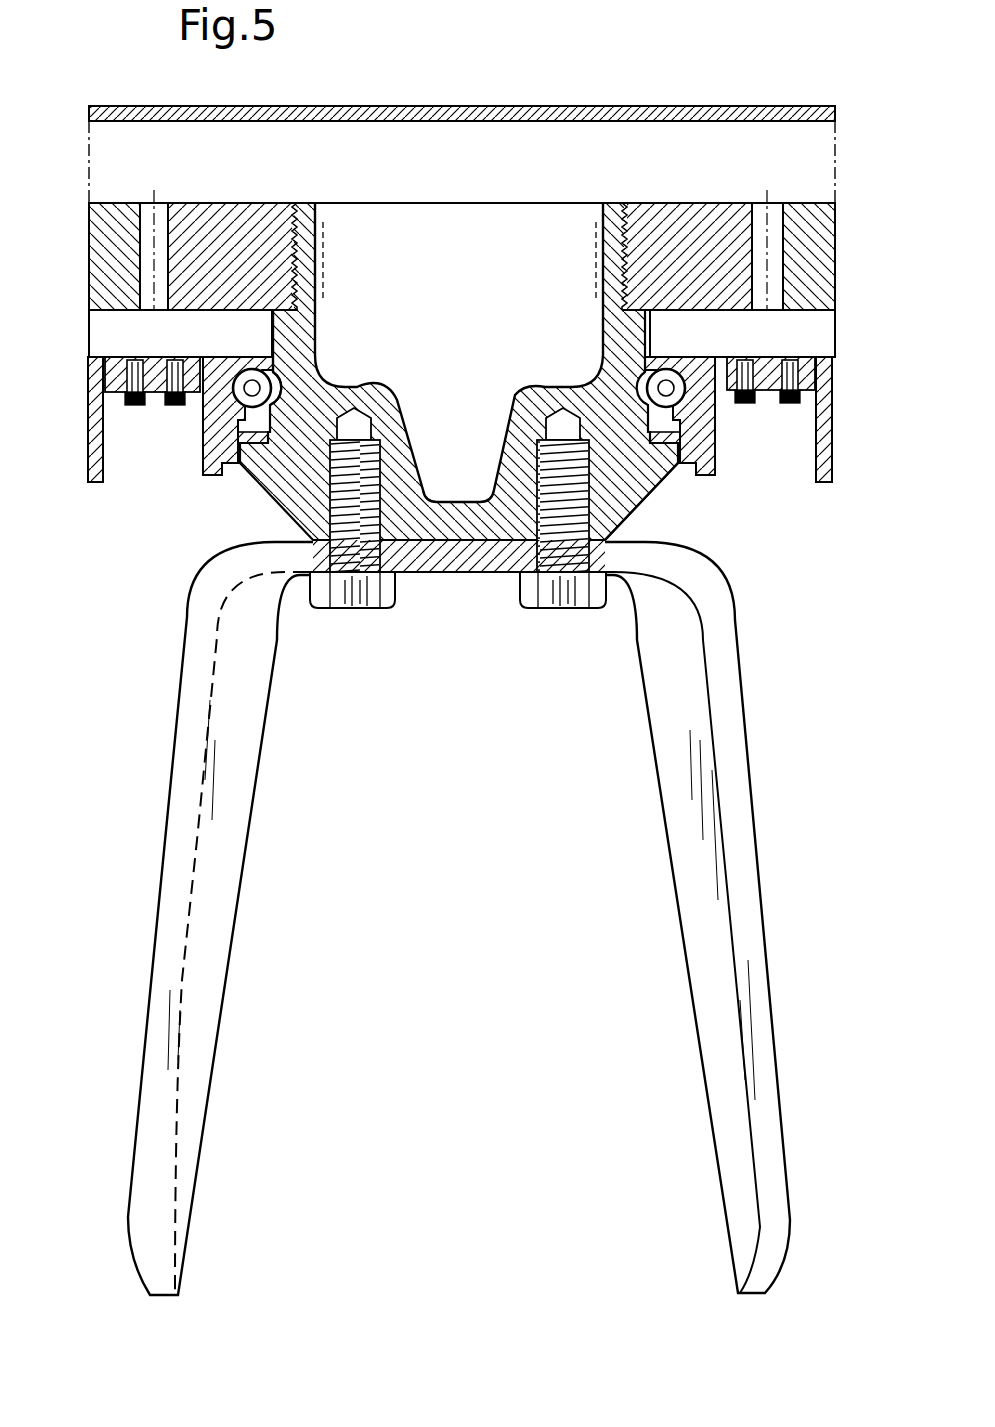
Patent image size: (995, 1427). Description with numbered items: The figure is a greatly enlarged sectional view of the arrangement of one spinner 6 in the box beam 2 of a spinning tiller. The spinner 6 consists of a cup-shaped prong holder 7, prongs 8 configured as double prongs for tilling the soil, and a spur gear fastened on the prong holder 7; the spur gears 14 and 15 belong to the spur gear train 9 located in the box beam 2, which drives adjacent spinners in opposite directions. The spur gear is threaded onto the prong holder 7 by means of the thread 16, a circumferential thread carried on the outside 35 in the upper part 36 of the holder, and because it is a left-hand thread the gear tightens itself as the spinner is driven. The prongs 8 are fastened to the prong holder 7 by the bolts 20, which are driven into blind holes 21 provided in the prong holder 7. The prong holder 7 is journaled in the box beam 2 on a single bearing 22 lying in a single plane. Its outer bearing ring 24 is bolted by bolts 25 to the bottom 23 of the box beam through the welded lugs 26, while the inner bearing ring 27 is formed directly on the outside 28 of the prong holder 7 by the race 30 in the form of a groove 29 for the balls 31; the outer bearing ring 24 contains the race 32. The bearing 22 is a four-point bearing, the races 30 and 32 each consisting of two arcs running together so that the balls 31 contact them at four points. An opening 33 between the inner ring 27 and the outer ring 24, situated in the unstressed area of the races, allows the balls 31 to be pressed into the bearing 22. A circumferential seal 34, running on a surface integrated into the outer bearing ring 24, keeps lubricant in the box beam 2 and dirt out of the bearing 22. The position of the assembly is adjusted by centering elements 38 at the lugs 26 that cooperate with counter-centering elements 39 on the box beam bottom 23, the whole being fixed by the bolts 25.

The box beam 2 is at (821, 143).
The spur gear train 9 is at (840, 192).
The spur gear 15 is at (117, 225).
The spur gear 14 is at (697, 225).
The thread 16 is at (627, 210).
The outside 35 is at (295, 232).
The upper part 36 is at (321, 256).
The balls 31 is at (600, 318).
The inner bearing ring 27 is at (265, 378).
The race 30 is at (268, 400).
The groove 29 is at (247, 418).
The blind holes 21 is at (377, 425).
The bottom 23 is at (98, 358).
The race 32 is at (205, 367).
The opening 33 is at (251, 368).
The welded lugs 26 is at (104, 388).
The centering elements 38 is at (798, 352).
The bolts 25 is at (754, 404).
The outer bearing ring 24 is at (710, 424).
The counter-centering elements 39 is at (142, 407).
The outside 28 is at (232, 463).
The prong holder 7 is at (281, 505).
The circumferential seal 34 is at (684, 467).
The single bearing 22 is at (716, 452).
The bolts 20 is at (355, 610).
The spinner 6 is at (155, 866).
The prongs 8 is at (229, 878).